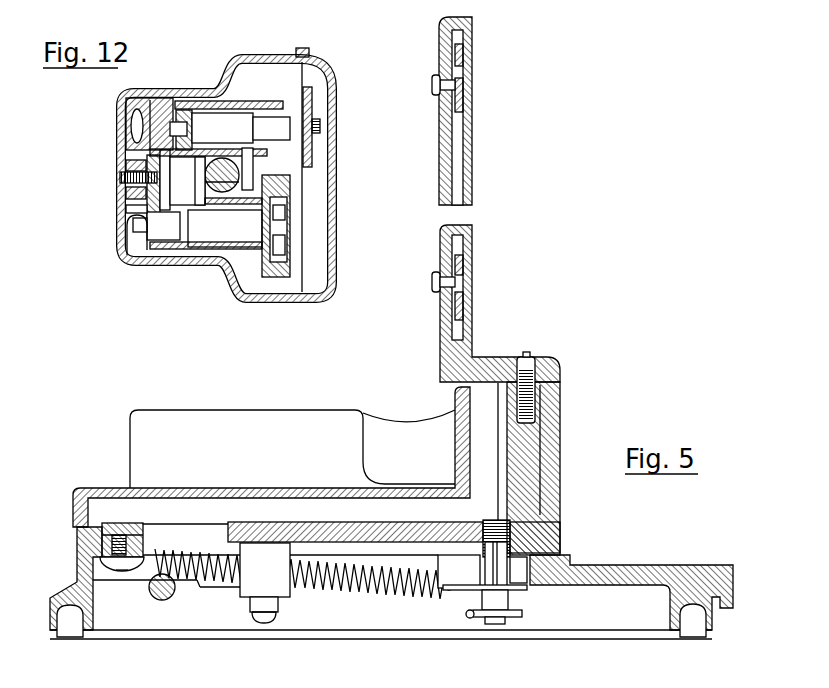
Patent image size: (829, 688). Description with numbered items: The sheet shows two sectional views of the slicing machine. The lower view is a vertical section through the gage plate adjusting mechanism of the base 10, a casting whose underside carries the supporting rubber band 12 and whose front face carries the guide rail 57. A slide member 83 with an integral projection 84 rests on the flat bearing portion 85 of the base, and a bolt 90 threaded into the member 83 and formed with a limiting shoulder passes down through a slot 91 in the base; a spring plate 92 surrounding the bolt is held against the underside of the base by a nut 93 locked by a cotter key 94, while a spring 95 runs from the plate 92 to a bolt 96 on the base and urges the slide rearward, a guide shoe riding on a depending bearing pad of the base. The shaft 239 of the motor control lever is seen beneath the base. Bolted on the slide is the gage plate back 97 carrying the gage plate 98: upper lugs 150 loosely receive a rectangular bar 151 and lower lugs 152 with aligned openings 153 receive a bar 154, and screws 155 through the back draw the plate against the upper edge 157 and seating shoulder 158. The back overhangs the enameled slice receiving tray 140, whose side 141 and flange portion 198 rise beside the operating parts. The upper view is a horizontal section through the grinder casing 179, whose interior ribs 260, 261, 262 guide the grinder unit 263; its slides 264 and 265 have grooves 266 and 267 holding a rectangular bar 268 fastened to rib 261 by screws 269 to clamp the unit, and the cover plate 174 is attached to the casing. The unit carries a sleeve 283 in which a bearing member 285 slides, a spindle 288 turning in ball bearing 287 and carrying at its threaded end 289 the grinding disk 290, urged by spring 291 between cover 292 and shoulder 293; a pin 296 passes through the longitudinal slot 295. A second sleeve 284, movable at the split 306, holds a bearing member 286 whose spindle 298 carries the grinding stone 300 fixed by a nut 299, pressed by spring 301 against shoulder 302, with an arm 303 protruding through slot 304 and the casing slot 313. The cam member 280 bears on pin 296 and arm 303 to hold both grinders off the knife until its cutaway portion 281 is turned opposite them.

In FIG. 12, the cover plate 174 is at (337, 241).
In FIG. 12, the interior rib 260 is at (126, 116).
In FIG. 12, the slide 264 is at (121, 103).
In FIG. 12, the groove 266 is at (134, 93).
In FIG. 12, the cylindrical sleeve 283 is at (260, 101).
In FIG. 12, the ball bearing 287 is at (187, 104).
In FIG. 12, the grinder casing 179 is at (204, 92).
In FIG. 12, the bearing member 285 is at (231, 66).
In FIG. 12, the shoulder 293 is at (300, 55).
In FIG. 12, the spindle 288 is at (185, 128).
In FIG. 12, the grinder unit 263 is at (152, 178).
In FIG. 12, the pin 296 is at (262, 178).
In FIG. 12, the shoulder 302 is at (213, 190).
In FIG. 12, the arm 303 is at (192, 175).
In FIG. 12, the longitudinal slot 313 is at (190, 200).
In FIG. 12, the cam member 280 is at (302, 186).
In FIG. 12, the cutaway portion 281 is at (220, 210).
In FIG. 12, the split 306 is at (204, 228).
In FIG. 12, the spring 301 is at (178, 250).
In FIG. 12, the slot 304 is at (162, 249).
In FIG. 12, the groove 267 is at (145, 250).
In FIG. 12, the cylindrical sleeve 284 is at (240, 250).
In FIG. 12, the grinding stone 300 is at (290, 186).
In FIG. 12, the nut 299 is at (285, 211).
In FIG. 12, the bearing member 286 is at (231, 262).
In FIG. 12, the grinding disk 290 is at (312, 106).
In FIG. 12, the threaded end 289 is at (321, 126).
In FIG. 12, the spring 291 is at (305, 64).
In FIG. 12, the cover 292 is at (310, 84).
In FIG. 12, the longitudinal slot 295 is at (318, 157).
In FIG. 12, the rectangular bar 268 is at (126, 168).
In FIG. 12, the screw 269 is at (120, 178).
In FIG. 12, the interior rib 261 is at (126, 192).
In FIG. 12, the slide 265 is at (147, 210).
In FIG. 12, the interior rib 262 is at (133, 228).
In FIG. 12, the spindle 298 is at (127, 238).
In FIG. 5, the upper edge 157 is at (452, 22).
In FIG. 5, the lug 150 is at (465, 58).
In FIG. 5, the rectangular bar 151 is at (468, 97).
In FIG. 5, the gage plate back 97 is at (442, 307).
In FIG. 5, the gage plate 98 is at (472, 241).
In FIG. 5, the rectangular bar 154 is at (453, 272).
In FIG. 5, the aligned openings 153 is at (462, 273).
In FIG. 5, the screw 155 is at (442, 283).
In FIG. 5, the lug 152 is at (465, 313).
In FIG. 5, the seating shoulder 158 is at (467, 342).
In FIG. 5, the slide member 83 is at (551, 457).
In FIG. 5, the slice receiving tray 140 is at (181, 488).
In FIG. 5, the upwardly extending side 141 is at (447, 405).
In FIG. 5, the flange portion 198 is at (226, 402).
In FIG. 5, the projection 84 is at (351, 529).
In FIG. 5, the base 10 is at (77, 557).
In FIG. 5, the supporting rubber band 12 is at (690, 628).
In FIG. 5, the guide rail 57 is at (735, 600).
In FIG. 5, the bearing portion 85 is at (557, 557).
In FIG. 5, the bolt 96 is at (113, 570).
In FIG. 5, the shaft 239 is at (156, 600).
In FIG. 5, the spring 95 is at (380, 589).
In FIG. 5, the bolt 90 is at (506, 566).
In FIG. 5, the spring plate 92 is at (467, 590).
In FIG. 5, the slot 91 is at (524, 590).
In FIG. 5, the nut 93 is at (513, 610).
In FIG. 5, the cotter key 94 is at (471, 618).